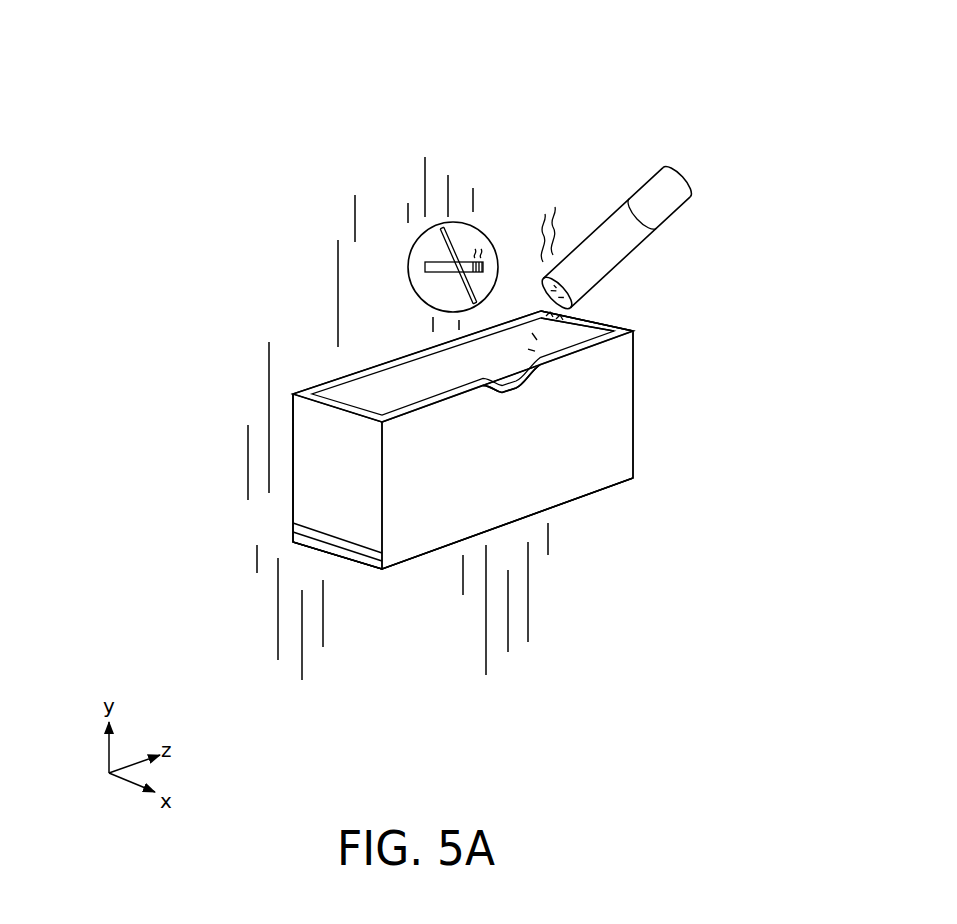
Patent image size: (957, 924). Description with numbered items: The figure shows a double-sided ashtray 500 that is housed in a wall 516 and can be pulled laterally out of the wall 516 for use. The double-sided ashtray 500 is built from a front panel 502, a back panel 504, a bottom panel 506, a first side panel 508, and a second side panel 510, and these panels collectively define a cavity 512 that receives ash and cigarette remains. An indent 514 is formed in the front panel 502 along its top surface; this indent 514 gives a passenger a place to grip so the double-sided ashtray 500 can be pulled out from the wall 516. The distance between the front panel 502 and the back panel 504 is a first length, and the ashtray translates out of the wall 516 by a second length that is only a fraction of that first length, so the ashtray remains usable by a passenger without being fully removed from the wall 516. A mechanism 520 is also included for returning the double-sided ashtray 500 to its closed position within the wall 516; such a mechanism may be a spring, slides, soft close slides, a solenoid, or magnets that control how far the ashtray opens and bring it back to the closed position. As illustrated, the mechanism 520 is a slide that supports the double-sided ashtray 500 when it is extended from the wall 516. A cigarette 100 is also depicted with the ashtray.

The double-sided ashtray 500 is at (148, 272).
The cigarette 100 is at (727, 162).
The front panel 502 is at (590, 487).
The back panel 504 is at (350, 398).
The bottom panel 506 is at (410, 560).
The first side panel 508 is at (313, 481).
The second side panel 510 is at (588, 337).
The cavity 512 is at (398, 370).
The indent 514 is at (528, 378).
The wall 516 is at (438, 160).
The mechanism 520 is at (342, 542).